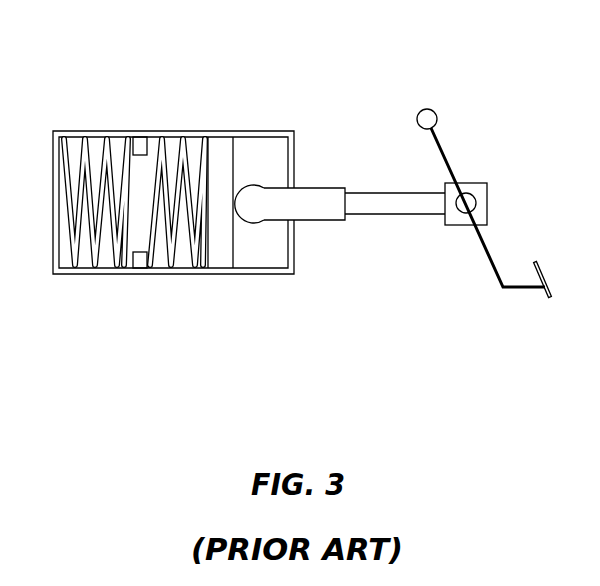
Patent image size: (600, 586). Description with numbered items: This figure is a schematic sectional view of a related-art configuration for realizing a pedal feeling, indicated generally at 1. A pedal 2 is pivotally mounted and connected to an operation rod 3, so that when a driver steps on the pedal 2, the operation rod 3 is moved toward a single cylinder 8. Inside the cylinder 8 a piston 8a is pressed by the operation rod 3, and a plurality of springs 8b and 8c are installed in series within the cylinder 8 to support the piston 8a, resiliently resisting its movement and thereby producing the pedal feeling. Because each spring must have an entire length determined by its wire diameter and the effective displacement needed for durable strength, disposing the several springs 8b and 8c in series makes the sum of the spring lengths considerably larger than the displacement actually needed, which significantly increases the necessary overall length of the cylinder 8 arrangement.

The pedal device 1 is at (484, 161).
The pedal 2 is at (450, 163).
The operation rod 3 is at (397, 212).
The cylinder 8 is at (169, 210).
The piston 8a is at (223, 257).
The spring 8b is at (192, 137).
The spring 8c is at (85, 137).